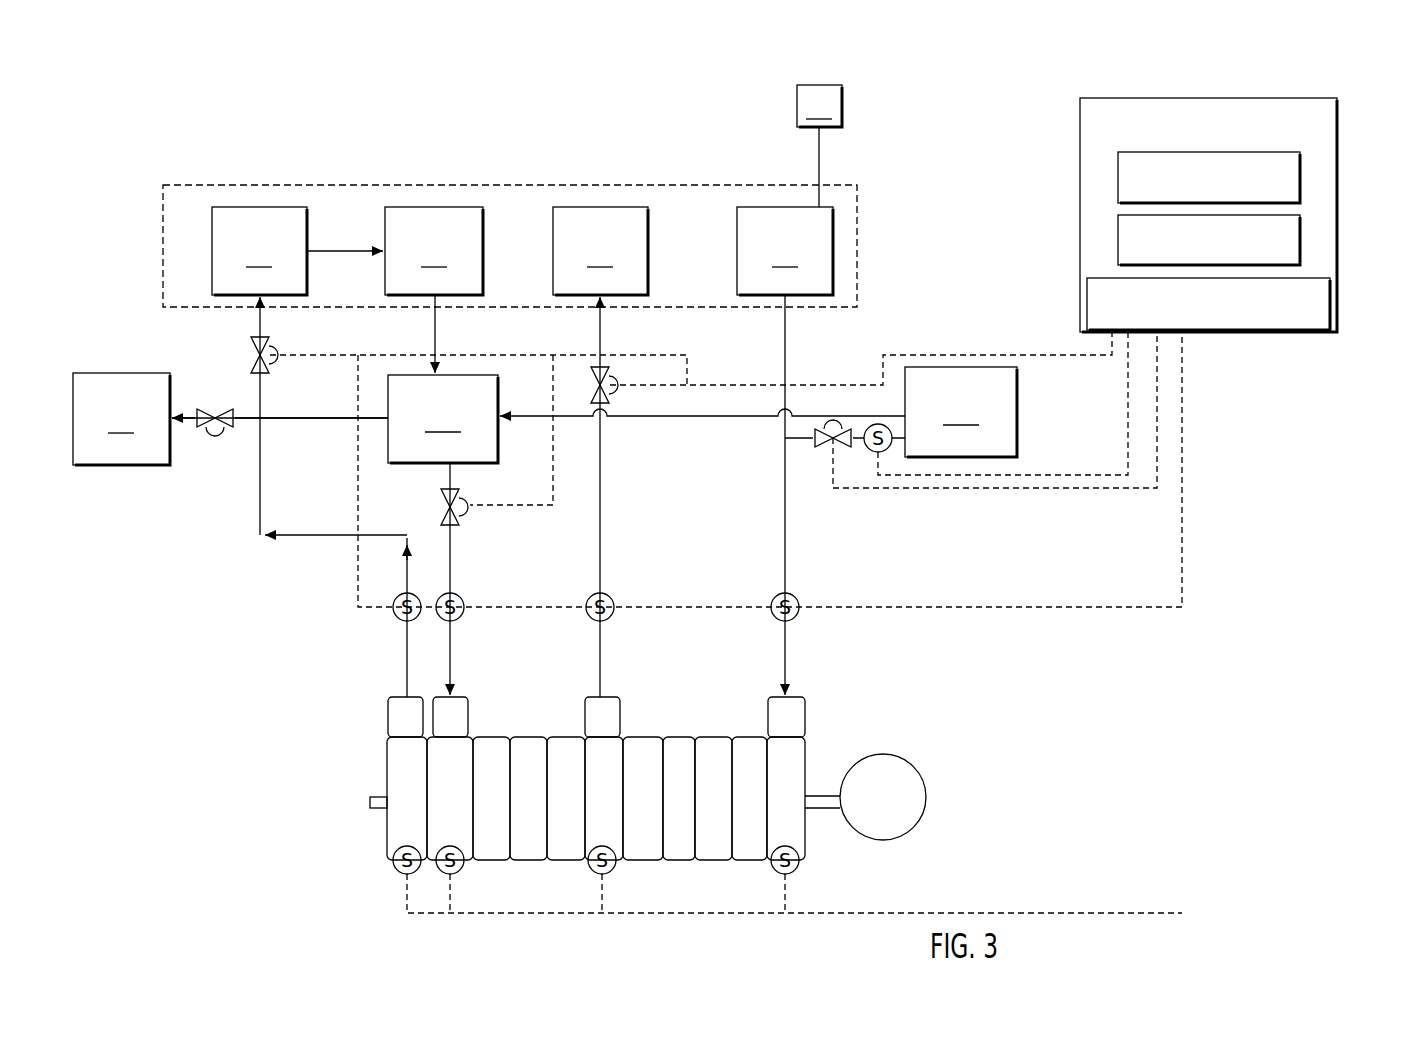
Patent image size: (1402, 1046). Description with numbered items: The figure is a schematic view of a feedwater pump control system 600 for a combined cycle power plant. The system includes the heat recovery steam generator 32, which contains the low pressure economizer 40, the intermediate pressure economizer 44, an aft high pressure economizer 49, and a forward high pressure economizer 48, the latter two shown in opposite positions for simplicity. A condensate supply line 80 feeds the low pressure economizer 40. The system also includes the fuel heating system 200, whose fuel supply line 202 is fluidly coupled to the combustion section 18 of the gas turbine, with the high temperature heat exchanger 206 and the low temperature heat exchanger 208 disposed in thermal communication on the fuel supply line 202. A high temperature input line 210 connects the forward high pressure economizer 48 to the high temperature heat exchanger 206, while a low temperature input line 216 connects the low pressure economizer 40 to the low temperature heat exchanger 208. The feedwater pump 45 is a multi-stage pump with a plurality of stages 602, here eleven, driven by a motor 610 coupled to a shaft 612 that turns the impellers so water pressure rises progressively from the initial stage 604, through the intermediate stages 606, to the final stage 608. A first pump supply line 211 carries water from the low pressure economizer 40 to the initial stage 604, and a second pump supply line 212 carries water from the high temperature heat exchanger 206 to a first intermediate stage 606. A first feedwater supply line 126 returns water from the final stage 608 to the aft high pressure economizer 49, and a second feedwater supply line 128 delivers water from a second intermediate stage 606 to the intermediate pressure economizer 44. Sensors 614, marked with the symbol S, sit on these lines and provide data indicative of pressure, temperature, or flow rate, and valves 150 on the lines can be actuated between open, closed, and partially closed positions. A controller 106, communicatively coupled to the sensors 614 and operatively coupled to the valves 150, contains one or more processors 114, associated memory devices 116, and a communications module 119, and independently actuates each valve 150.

The feedwater pump control system 600 is at (982, 90).
The controller 106 is at (1337, 133).
The processor(s) 114 is at (1300, 177).
The memory device(s) 116 is at (1300, 238).
The communications module 119 is at (1330, 297).
The fuel heating system 200 is at (1002, 298).
The heat recovery steam generator 32 is at (745, 185).
The condensate supply line 80 is at (819, 146).
The aft high pressure economizer 49 is at (259, 251).
The forward high pressure economizer 48 is at (395, 251).
The intermediate pressure economizer 44 is at (600, 251).
The low pressure economizer 40 is at (785, 251).
The combustion section 18 is at (121, 419).
The high temperature heat exchanger 206 is at (443, 419).
The low temperature heat exchanger 208 is at (961, 412).
The high temperature input line 210 is at (435, 333).
The valve 150 is at (203, 428).
The fuel supply line 202 is at (716, 416).
The low temperature input line 216 is at (800, 440).
The sensor 614 is at (462, 617).
The second feedwater supply line 128 is at (600, 535).
The first pump supply line 211 is at (785, 548).
The second pump supply line 212 is at (450, 568).
The first feedwater supply line 126 is at (407, 655).
The feedwater pump 45 is at (906, 696).
The plurality of stages 602 is at (647, 829).
The initial stage 604 is at (797, 752).
The intermediate stages 606 is at (470, 848).
The final stage 608 is at (395, 828).
The motor 610 is at (915, 778).
The shaft 612 is at (826, 808).